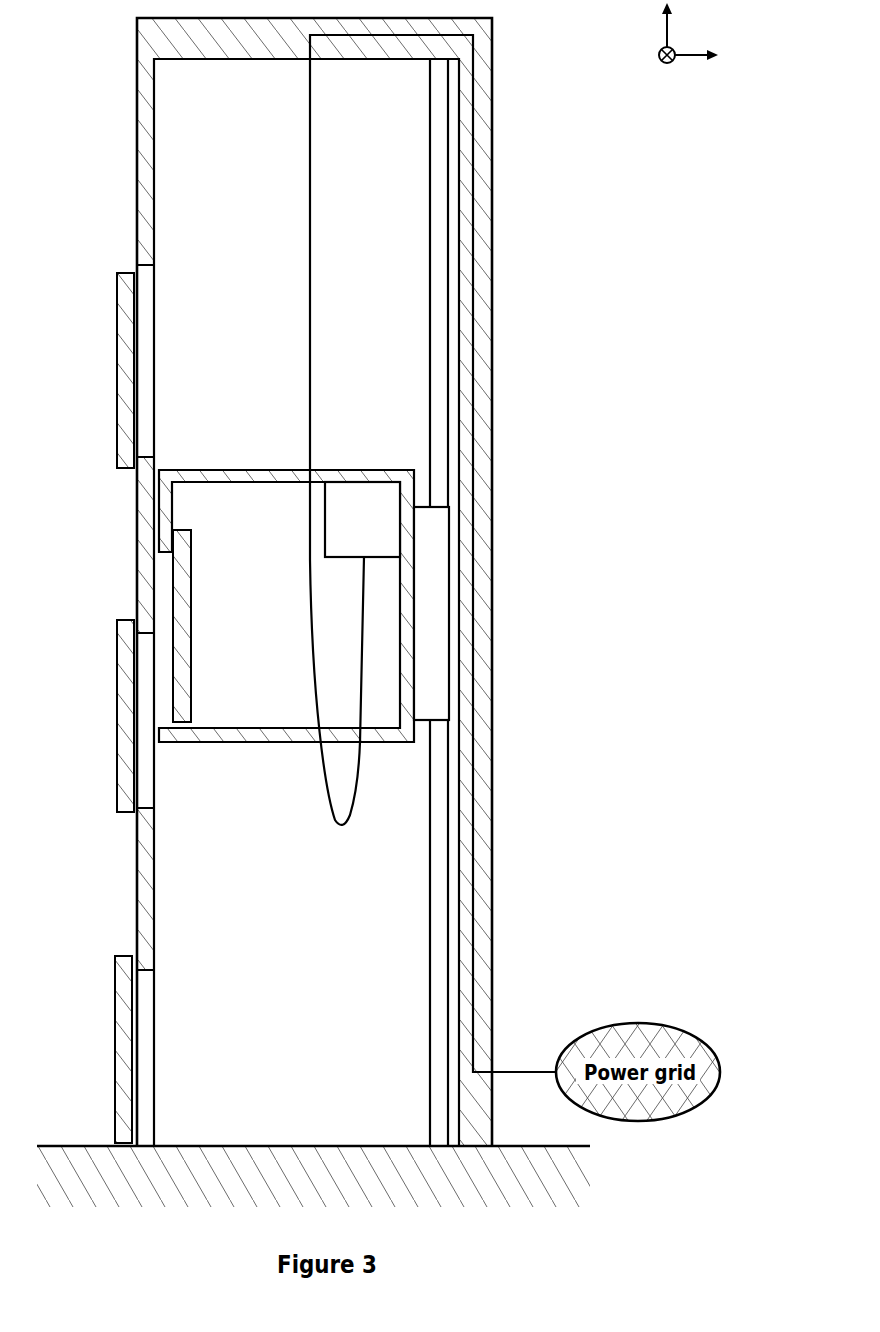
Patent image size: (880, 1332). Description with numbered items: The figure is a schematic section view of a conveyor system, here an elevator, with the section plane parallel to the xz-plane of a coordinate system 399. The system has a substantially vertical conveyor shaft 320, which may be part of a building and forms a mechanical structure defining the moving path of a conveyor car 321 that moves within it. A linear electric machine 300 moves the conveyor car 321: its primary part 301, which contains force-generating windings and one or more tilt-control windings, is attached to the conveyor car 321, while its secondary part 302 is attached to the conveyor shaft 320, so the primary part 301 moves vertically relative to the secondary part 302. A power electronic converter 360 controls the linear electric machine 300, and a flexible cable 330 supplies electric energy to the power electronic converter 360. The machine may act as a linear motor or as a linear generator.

The linear electric machine 300 is at (531, 602).
The primary part 301 is at (438, 575).
The secondary part 302 is at (438, 308).
The conveyor shaft 320 is at (198, 389).
The conveyor car 321 is at (255, 613).
The flexible cable 330 is at (308, 289).
The power electronic converter 360 is at (347, 533).
The coordinate system 399 is at (681, 41).